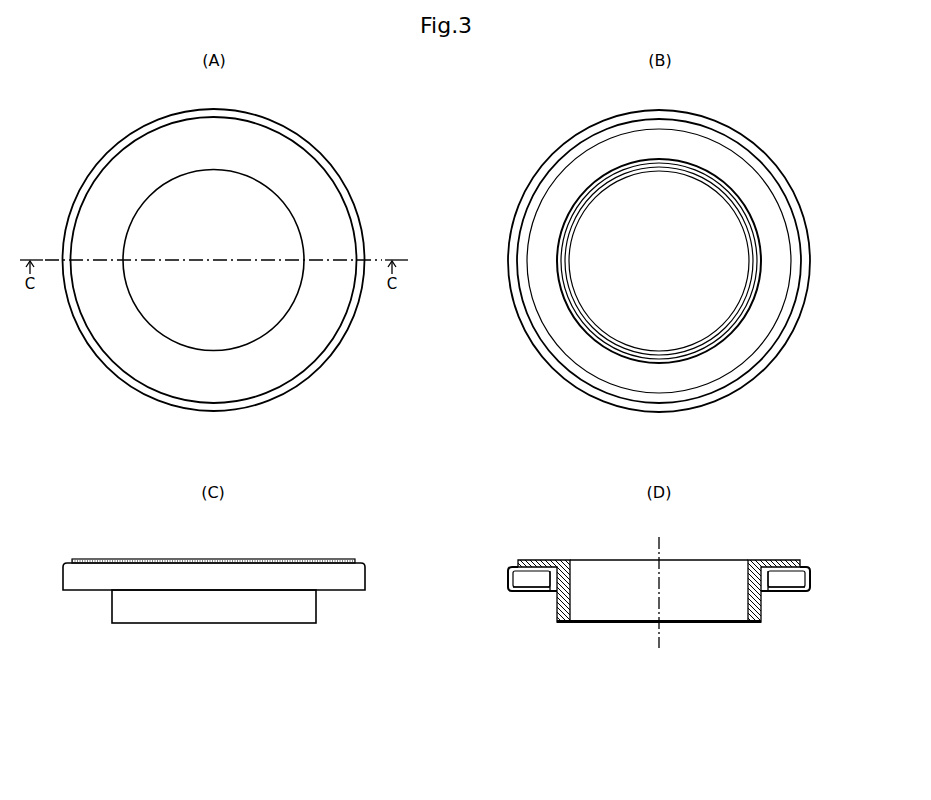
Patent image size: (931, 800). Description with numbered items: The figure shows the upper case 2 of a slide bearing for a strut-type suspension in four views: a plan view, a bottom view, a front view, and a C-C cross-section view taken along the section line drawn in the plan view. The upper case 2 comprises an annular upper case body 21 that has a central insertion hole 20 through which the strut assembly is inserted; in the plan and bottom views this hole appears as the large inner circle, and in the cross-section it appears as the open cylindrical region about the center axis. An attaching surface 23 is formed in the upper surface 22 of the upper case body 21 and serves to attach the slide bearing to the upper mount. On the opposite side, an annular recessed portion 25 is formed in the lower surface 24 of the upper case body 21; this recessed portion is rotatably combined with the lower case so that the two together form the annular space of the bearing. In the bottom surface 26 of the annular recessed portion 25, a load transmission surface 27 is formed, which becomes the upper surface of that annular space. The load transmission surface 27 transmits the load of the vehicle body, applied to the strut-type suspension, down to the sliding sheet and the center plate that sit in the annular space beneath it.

The upper case 2 is at (353, 113).
The insertion hole 20 is at (162, 216).
The upper case body 21 is at (347, 184).
The upper surface 22 is at (267, 141).
The attaching surface 23 is at (280, 161).
The lower surface 24 is at (795, 208).
The annular recessed portion 25 is at (788, 263).
The bottom surface 26 is at (528, 591).
The load transmission surface 27 is at (552, 595).